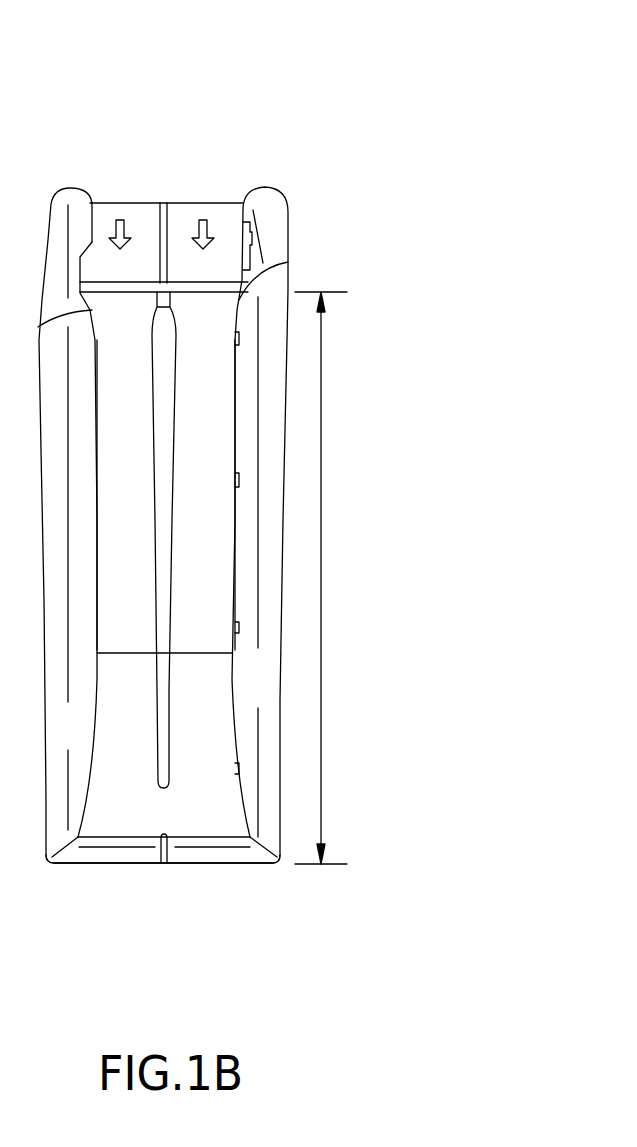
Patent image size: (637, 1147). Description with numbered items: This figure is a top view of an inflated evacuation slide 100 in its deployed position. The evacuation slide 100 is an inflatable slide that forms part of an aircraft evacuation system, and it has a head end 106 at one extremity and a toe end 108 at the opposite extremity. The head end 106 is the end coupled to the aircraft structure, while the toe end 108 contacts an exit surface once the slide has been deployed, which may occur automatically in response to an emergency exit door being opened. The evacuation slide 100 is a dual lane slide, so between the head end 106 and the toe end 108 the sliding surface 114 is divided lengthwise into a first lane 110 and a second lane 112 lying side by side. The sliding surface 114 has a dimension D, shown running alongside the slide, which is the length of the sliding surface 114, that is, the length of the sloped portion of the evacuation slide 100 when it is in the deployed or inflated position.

The evacuation slide 100 is at (378, 441).
The head end 106 is at (156, 126).
The toe end 108 is at (176, 900).
The first lane 110 is at (137, 505).
The second lane 112 is at (215, 505).
The sliding surface 114 is at (217, 823).
The dimension D is at (320, 630).